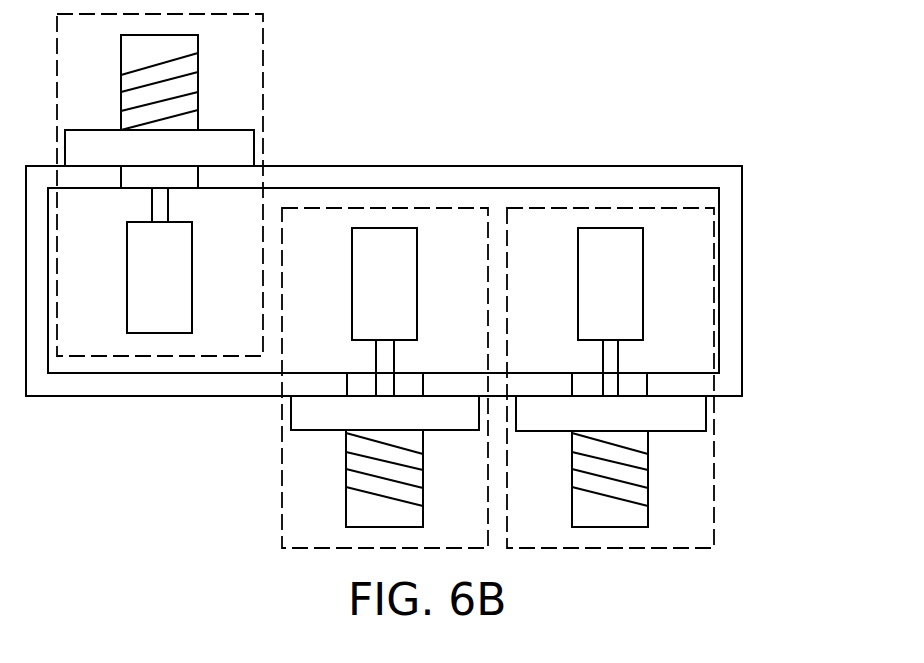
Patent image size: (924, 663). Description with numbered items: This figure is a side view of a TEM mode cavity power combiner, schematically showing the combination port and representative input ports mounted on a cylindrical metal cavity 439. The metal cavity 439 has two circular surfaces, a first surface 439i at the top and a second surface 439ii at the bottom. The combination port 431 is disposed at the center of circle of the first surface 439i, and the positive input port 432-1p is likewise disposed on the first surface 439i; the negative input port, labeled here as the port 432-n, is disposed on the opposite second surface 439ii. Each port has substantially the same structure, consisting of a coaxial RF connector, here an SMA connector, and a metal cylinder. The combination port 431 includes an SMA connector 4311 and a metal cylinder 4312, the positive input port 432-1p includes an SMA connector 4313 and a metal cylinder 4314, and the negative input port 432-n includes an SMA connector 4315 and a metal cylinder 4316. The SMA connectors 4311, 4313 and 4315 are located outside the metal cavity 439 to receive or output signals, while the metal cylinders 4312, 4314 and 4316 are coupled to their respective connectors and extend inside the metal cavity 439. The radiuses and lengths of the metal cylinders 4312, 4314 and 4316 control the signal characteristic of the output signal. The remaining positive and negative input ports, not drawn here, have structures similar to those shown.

The metal cavity 439 is at (742, 258).
The first surface 439i is at (605, 165).
The second surface 439ii is at (163, 396).
The combination port 431 is at (417, 208).
The SMA connector 4311 is at (353, 504).
The metal cylinder 4312 is at (405, 275).
The SMA connector 4313 is at (638, 517).
The metal cylinder 4314 is at (634, 292).
The SMA connector 4315 is at (225, 145).
The metal cylinder 4316 is at (140, 294).
The n-th module 432-n is at (270, 60).
The positive input port 432-1p is at (597, 548).